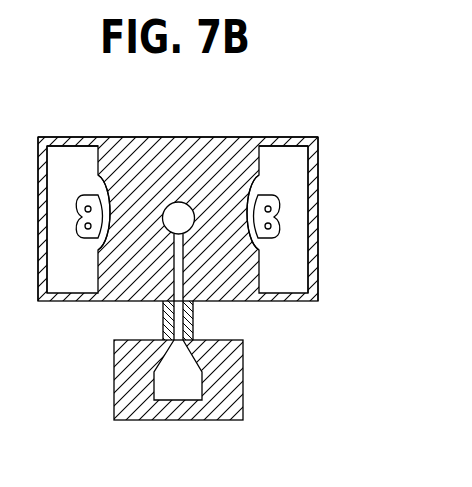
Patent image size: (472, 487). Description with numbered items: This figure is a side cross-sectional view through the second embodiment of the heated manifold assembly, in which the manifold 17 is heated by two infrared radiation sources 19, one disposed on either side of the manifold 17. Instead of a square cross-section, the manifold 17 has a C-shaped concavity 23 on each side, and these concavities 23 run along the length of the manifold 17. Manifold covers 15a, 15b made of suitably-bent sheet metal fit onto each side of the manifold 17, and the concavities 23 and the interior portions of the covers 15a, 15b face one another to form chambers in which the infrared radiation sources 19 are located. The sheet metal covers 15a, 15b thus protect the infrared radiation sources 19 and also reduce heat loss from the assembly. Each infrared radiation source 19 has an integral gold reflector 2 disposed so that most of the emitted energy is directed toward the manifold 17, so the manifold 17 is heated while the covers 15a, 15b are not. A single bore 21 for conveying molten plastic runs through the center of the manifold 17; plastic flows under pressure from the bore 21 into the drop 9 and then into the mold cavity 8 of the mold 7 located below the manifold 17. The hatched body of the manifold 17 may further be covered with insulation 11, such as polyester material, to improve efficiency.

The insulation 11 is at (150, 147).
The manifold 17 is at (202, 137).
The manifold cover 15a is at (38, 301).
The manifold cover 15b is at (308, 137).
The C-shaped concavity 23 is at (113, 208).
The gold reflector 2 is at (87, 239).
The infrared radiation source 19 is at (83, 202).
The bore 21 is at (191, 227).
The drop 9 is at (163, 313).
The mold 7 is at (243, 367).
The mold cavity 8 is at (173, 393).